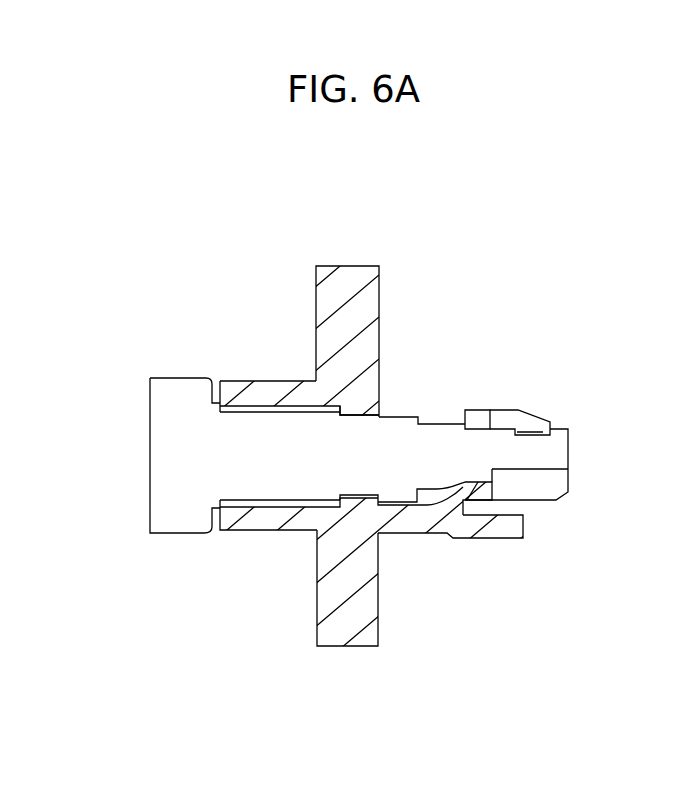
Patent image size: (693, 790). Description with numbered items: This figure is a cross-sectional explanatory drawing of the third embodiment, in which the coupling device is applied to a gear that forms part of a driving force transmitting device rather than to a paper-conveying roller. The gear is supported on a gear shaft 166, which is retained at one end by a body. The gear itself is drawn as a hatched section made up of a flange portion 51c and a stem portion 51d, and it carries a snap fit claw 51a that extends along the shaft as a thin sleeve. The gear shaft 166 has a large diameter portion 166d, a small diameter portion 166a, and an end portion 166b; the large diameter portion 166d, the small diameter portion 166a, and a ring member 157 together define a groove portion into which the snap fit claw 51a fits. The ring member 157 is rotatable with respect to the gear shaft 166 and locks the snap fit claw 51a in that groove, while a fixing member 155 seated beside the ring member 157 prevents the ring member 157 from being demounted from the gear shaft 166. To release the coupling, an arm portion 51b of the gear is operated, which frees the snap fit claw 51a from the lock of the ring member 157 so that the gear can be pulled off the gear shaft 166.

The gear shaft 166 is at (180, 430).
The small diameter portion 166a is at (434, 435).
The end portion 166b is at (557, 448).
The large diameter portion 166d is at (389, 437).
The ring member 157 is at (475, 422).
The fixing member 155 is at (530, 410).
The snap fit claw 51a is at (442, 507).
The arm portion 51b is at (495, 537).
The flange portion 51c is at (270, 522).
The stem portion 51d is at (343, 628).